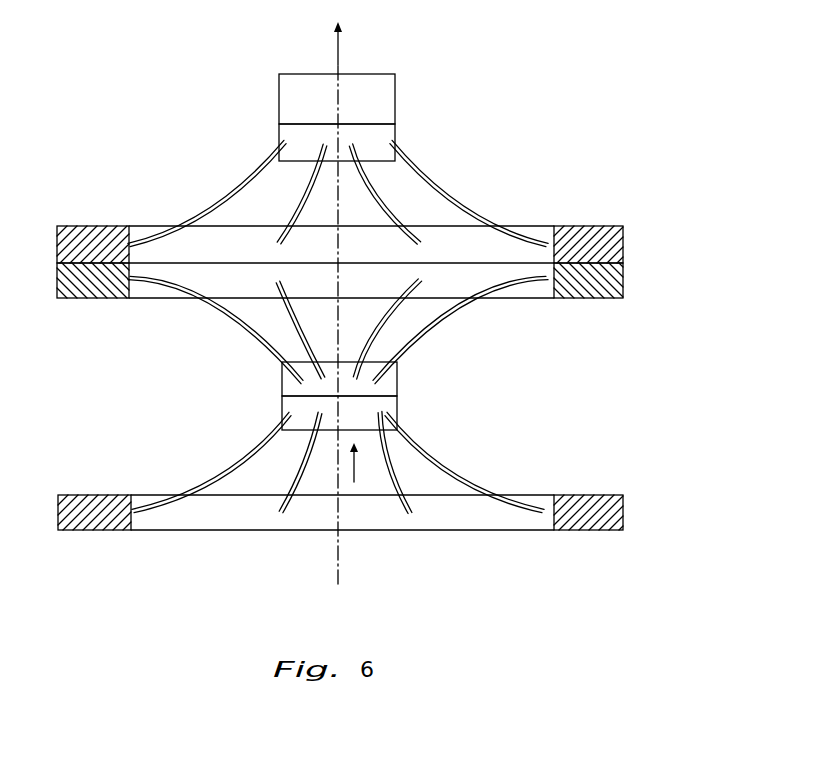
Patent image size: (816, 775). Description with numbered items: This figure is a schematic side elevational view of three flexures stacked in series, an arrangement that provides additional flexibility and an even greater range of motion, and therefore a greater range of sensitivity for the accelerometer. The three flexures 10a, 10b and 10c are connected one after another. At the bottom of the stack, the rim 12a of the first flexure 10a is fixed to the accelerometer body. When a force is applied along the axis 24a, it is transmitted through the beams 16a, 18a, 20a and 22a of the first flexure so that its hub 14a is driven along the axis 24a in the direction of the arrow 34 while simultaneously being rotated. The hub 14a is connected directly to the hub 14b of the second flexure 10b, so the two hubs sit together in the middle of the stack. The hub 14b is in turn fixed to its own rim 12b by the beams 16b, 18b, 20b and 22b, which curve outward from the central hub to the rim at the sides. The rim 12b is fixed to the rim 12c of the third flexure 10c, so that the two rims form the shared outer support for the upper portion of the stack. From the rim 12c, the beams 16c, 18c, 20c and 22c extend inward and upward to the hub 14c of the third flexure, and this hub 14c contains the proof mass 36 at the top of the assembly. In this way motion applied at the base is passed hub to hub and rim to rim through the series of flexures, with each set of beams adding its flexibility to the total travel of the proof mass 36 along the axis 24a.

The flexure 10a is at (630, 502).
The flexure 10b is at (630, 283).
The flexure 10c is at (630, 234).
The rim 12a is at (587, 531).
The rim 12b is at (593, 300).
The rim 12c is at (580, 228).
The hub 14a is at (398, 412).
The hub 14b is at (398, 379).
The hub 14c is at (397, 138).
The beam 16a is at (233, 462).
The beam 16b is at (238, 328).
The beam 16c is at (228, 195).
The beam 18a is at (297, 463).
The beam 18b is at (295, 320).
The beam 18c is at (299, 202).
The beam 20a is at (378, 461).
The beam 20b is at (400, 310).
The beam 20c is at (383, 198).
The beam 22a is at (442, 463).
The beam 22b is at (457, 320).
The beam 22c is at (442, 193).
The axis 24a is at (337, 553).
The arrow 34 is at (356, 467).
The proof mass 36 is at (397, 100).